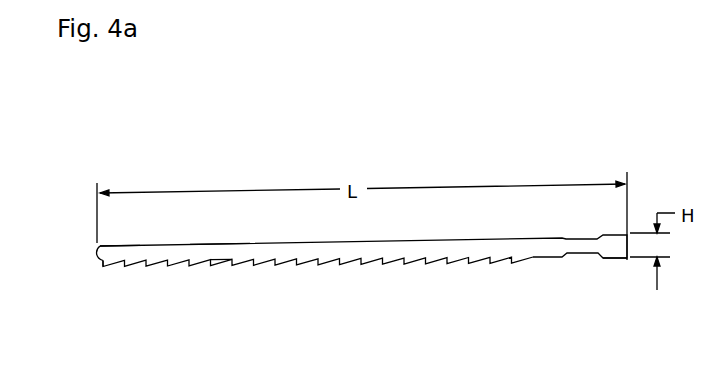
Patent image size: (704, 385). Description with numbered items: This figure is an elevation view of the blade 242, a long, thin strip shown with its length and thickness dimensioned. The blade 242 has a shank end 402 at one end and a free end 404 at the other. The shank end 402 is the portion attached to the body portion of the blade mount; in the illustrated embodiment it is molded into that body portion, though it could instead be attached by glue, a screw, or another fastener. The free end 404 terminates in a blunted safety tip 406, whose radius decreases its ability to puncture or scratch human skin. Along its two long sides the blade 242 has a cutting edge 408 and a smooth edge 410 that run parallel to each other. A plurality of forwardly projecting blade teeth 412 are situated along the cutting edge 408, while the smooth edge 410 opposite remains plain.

The blade 242 is at (372, 246).
The shank end 402 is at (612, 257).
The free end 404 is at (103, 263).
The blunted safety tip 406 is at (98, 242).
The cutting edge 408 is at (218, 261).
The smooth edge 410 is at (210, 243).
The blade teeth 412 is at (430, 260).